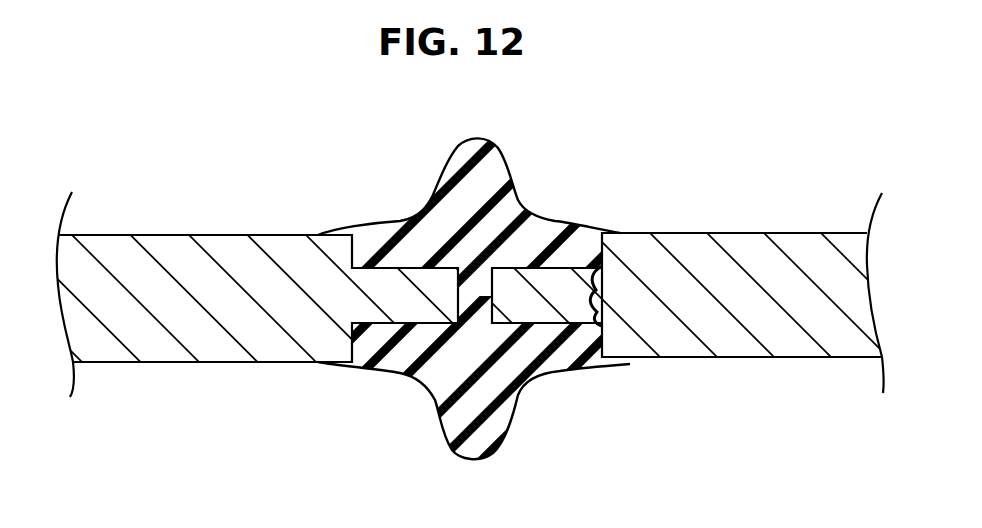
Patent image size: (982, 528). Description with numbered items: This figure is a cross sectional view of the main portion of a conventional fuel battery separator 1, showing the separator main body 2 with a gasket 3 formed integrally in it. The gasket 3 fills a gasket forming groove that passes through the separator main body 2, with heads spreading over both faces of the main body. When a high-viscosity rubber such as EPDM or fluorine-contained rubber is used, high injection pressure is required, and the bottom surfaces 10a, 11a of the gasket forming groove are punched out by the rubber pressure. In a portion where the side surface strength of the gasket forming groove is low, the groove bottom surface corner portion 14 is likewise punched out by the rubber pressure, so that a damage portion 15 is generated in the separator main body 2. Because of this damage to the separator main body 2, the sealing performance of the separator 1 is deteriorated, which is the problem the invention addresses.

The fuel battery separator 1 is at (757, 215).
The separator main body 2 is at (815, 272).
The gasket 3 is at (474, 266).
The bottom surface of the gasket forming groove 10a is at (575, 230).
The bottom surface of the gasket forming groove 11a is at (590, 320).
The groove bottom surface corner portion 14 is at (365, 240).
The damage portion 15 is at (605, 268).